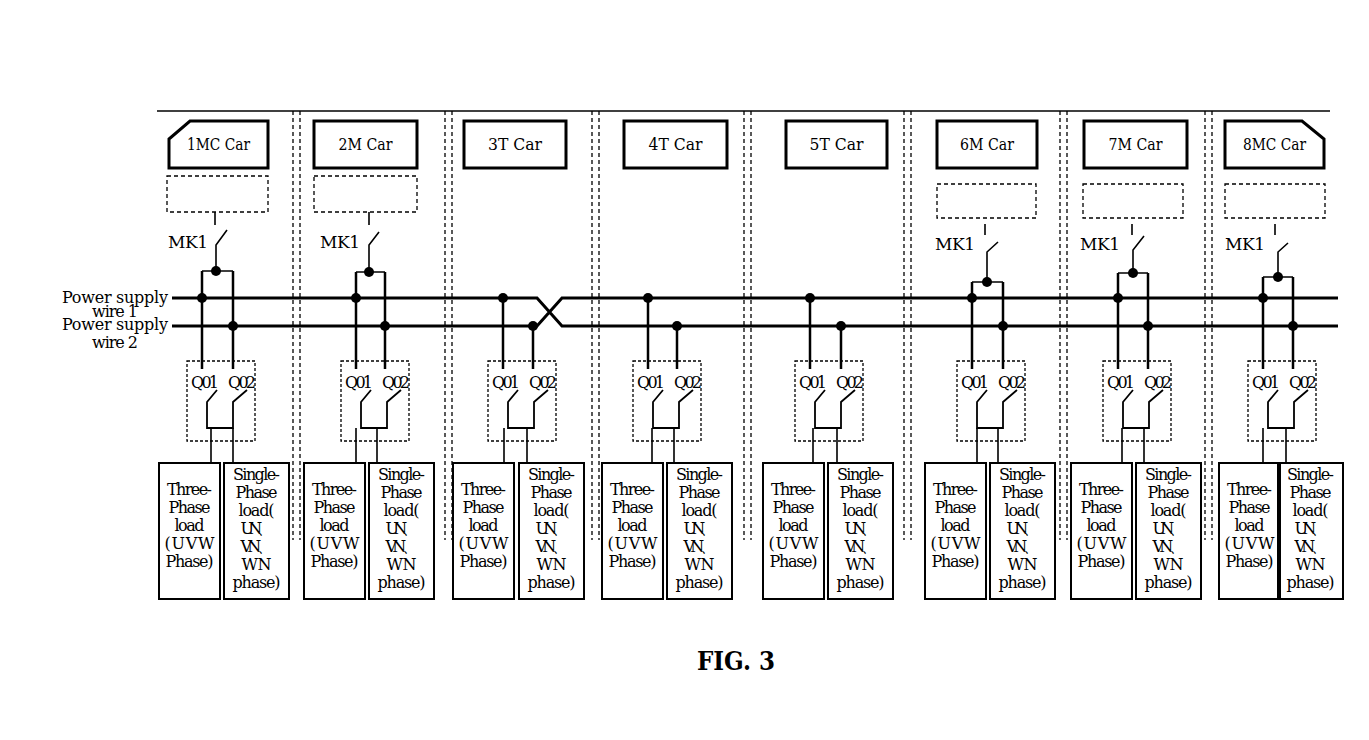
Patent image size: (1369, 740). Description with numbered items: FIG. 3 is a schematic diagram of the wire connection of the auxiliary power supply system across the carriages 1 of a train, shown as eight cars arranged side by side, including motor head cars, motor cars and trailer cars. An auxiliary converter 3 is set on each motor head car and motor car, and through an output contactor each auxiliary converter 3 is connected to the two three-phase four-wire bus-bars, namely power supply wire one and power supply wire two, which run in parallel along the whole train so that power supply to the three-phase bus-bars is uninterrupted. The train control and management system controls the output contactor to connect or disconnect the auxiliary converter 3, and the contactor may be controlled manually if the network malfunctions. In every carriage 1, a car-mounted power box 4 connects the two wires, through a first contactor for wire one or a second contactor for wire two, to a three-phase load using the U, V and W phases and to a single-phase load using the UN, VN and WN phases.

The carriage 1 is at (310, 110).
The auxiliary converter 3 is at (180, 197).
The car-mounted power box 4 is at (200, 407).